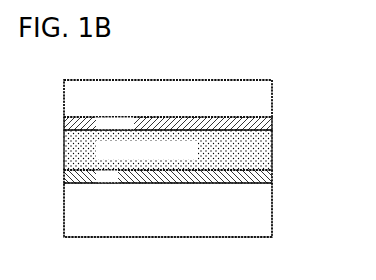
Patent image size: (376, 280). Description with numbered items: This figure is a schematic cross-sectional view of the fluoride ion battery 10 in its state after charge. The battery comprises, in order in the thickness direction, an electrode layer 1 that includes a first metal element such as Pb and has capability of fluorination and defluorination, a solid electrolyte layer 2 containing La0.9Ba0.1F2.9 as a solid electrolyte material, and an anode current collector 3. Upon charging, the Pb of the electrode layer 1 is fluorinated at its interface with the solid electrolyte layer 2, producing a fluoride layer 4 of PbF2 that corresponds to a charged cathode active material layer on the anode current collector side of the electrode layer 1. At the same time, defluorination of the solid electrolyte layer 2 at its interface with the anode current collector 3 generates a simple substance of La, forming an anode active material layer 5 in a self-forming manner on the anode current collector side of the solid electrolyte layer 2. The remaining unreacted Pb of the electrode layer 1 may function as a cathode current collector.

The fluoride ion battery 10 is at (259, 66).
The electrode layer 1 is at (260, 105).
The fluoride layer 4 is at (260, 123).
The solid electrolyte layer 2 is at (264, 155).
The anode active material layer 5 is at (264, 173).
The anode current collector 3 is at (258, 211).